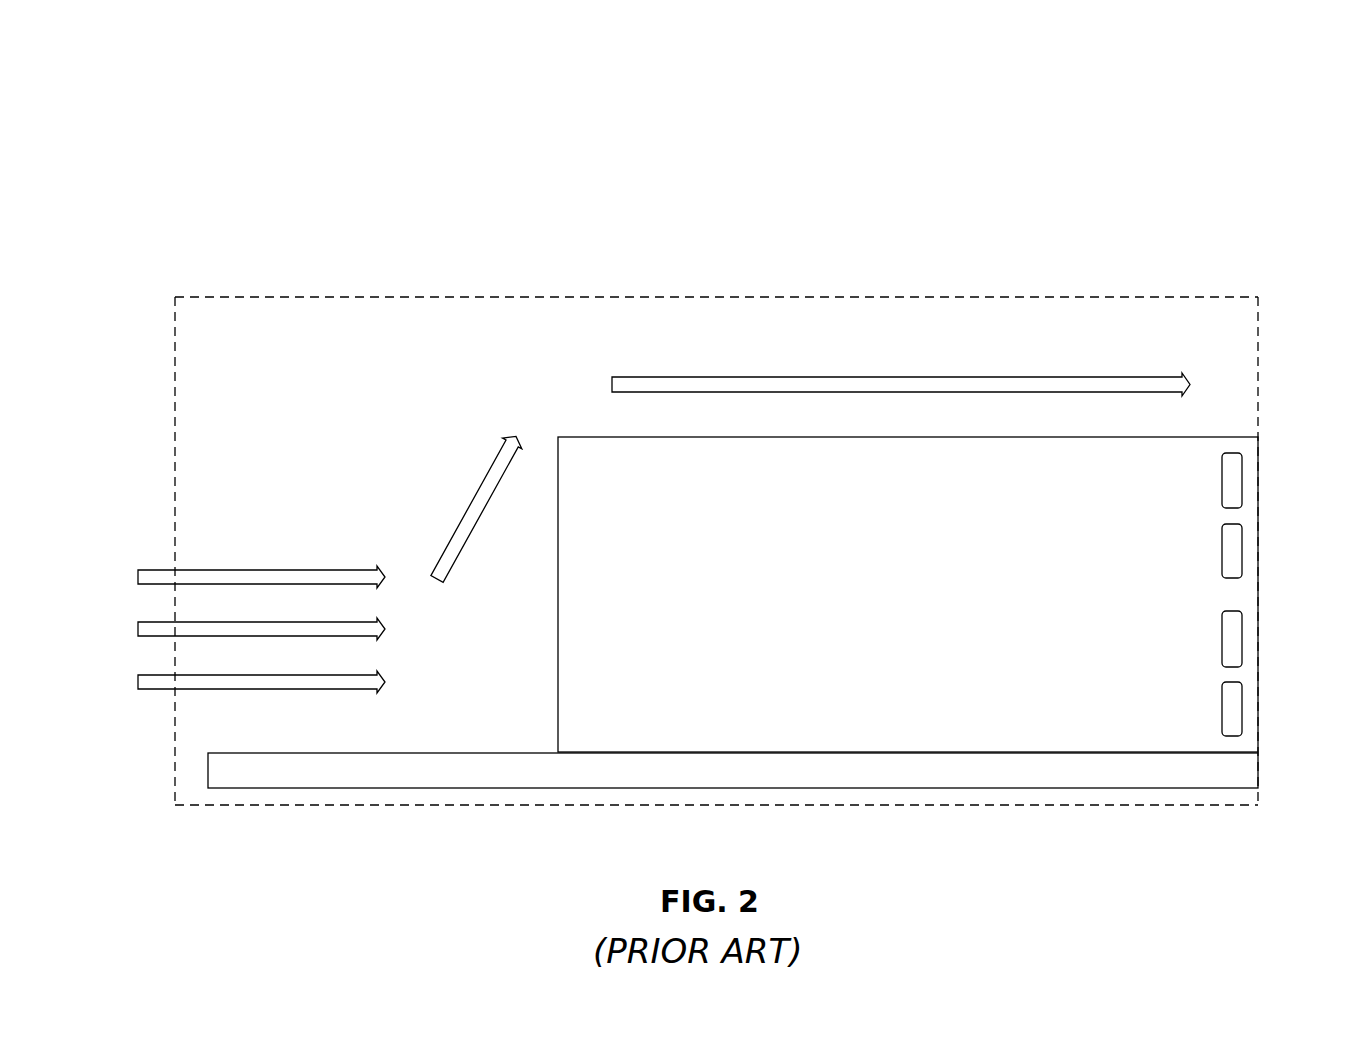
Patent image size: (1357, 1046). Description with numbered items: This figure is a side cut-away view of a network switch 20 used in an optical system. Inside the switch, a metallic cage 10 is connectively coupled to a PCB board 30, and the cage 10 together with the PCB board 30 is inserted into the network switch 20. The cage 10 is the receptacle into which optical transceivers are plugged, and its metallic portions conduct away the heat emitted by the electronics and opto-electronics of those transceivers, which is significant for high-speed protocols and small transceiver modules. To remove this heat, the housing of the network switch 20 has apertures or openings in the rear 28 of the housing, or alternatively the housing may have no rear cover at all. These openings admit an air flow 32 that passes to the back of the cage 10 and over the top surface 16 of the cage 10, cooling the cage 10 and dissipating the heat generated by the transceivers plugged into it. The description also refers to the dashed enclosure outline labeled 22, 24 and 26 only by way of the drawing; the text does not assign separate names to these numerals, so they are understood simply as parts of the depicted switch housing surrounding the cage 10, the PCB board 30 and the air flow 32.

The cage 10 is at (594, 610).
The top surface of the cage 16 is at (630, 437).
The network switch 20 is at (227, 141).
The top wall of enclosure 22 is at (716, 297).
The rear wall of enclosure 24 is at (1259, 307).
The bottom wall of enclosure 26 is at (330, 805).
The rear of the housing 28 is at (175, 455).
The PCB board 30 is at (434, 752).
The air flow 32 is at (295, 569).